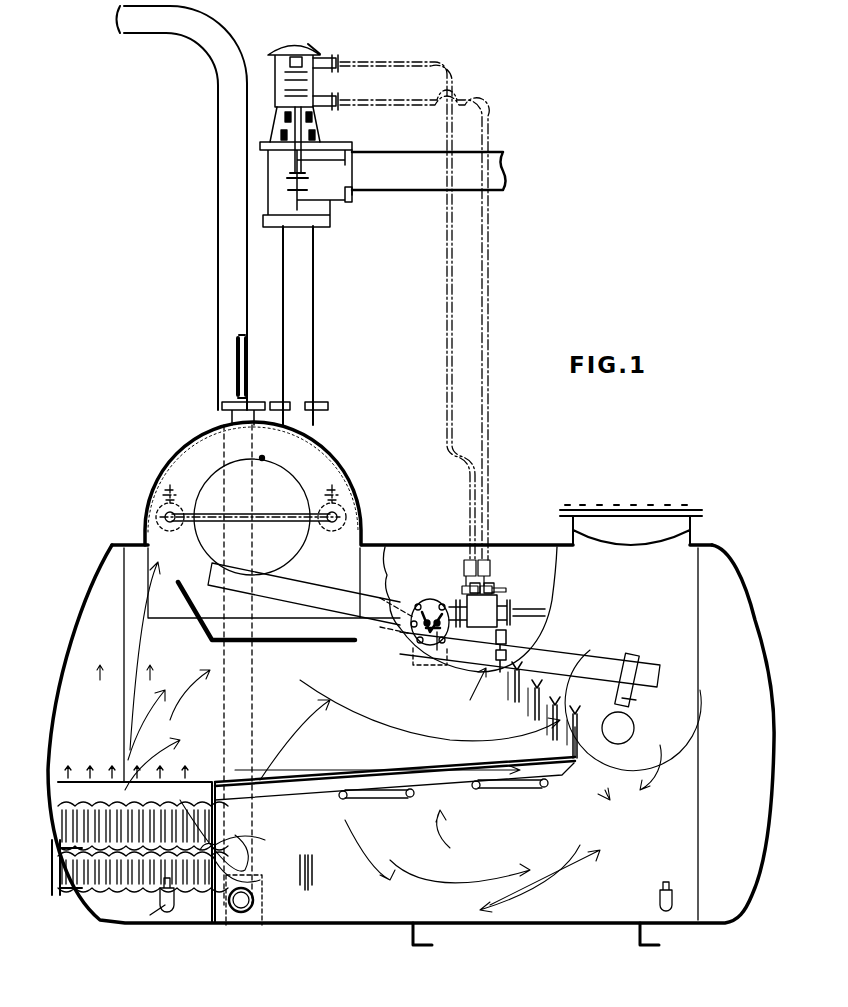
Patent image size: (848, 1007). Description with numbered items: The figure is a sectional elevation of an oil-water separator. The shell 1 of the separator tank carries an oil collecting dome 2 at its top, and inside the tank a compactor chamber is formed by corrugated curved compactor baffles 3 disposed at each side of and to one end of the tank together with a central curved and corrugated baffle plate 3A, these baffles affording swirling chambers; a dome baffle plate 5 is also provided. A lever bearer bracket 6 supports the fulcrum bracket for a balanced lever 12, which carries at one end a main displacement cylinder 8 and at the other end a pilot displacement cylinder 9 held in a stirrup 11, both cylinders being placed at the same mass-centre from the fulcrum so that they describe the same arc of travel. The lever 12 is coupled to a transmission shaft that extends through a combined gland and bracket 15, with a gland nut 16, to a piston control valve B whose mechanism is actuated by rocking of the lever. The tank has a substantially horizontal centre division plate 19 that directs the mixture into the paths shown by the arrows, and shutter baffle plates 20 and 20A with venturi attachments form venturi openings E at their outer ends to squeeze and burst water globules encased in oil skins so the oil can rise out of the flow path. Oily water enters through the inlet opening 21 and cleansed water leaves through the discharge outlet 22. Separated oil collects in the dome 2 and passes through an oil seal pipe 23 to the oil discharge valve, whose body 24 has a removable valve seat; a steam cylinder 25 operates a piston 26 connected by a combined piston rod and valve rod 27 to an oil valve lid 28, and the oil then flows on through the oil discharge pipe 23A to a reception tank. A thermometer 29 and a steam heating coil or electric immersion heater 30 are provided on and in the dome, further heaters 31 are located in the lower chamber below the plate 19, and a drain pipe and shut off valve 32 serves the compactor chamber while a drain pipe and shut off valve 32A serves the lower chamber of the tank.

The shell of separator tank 1 is at (321, 926).
The oil collecting dome 2 is at (344, 471).
The corrugated curved compactor baffles 3 is at (168, 800).
The central curved and corrugated baffle plate 3A is at (190, 880).
The dome baffle plate 5 is at (284, 643).
The lever bearer bracket 6 is at (410, 664).
The main displacement cylinder 8 is at (264, 475).
The pilot displacement cylinder 9 is at (622, 728).
The stirrup 11 is at (636, 700).
The balanced lever 12 is at (342, 600).
The combined gland and bracket 15 is at (412, 634).
The gland nut 16 is at (437, 650).
The centre division plate 19 is at (372, 770).
The shutter baffle plate 20 is at (545, 678).
The shutter baffle plate 20A is at (312, 842).
The oily water inlet opening 21 is at (68, 870).
The cleansed water discharge outlet 22 is at (218, 270).
The oil seal pipe 23 is at (298, 291).
The oil discharge pipe 23A is at (412, 165).
The body of oil discharge valve 24 is at (332, 175).
The steam cylinder 25 is at (318, 52).
The piston 26 is at (284, 62).
The combined piston rod and valve rod 27 is at (296, 128).
The oil valve lid 28 is at (268, 183).
The thermometer 29 is at (236, 372).
The steam heating coil or electric immersion heater 30 is at (318, 525).
The steam heating coils or electric immersion heaters 31 is at (366, 796).
The drain pipe and shut off valve 32 is at (162, 915).
The drain pipe and shut off valve 32A is at (660, 903).
The piston control valve B is at (484, 608).
The venturi openings E is at (562, 712).